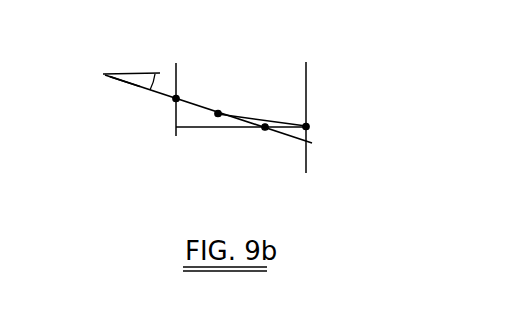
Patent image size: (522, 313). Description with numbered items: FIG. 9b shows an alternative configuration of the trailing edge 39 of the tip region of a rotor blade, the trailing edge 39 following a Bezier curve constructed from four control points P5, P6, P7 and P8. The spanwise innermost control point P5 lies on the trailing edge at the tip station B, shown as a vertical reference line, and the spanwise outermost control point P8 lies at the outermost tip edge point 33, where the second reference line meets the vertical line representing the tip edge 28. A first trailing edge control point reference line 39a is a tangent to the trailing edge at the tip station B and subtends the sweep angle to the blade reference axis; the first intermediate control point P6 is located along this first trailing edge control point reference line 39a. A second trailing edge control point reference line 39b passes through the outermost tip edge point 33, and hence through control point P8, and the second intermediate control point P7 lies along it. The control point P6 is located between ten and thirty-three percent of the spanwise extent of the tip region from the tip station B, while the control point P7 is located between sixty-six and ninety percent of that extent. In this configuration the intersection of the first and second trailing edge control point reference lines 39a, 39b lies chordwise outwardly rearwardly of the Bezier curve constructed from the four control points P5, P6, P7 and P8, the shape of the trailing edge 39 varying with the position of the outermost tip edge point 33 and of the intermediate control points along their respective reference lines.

The trailing edge 39 is at (240, 115).
The first trailing edge control point reference line 39a is at (124, 83).
The second trailing edge control point reference line 39b is at (195, 128).
The tip edge 28 is at (307, 83).
The outermost tip edge point 33 is at (308, 128).
The tip station B is at (176, 103).
The control point P5 is at (175, 96).
The first intermediate control point P6 is at (218, 117).
The second intermediate control point P7 is at (267, 130).
The control point P8 is at (304, 123).